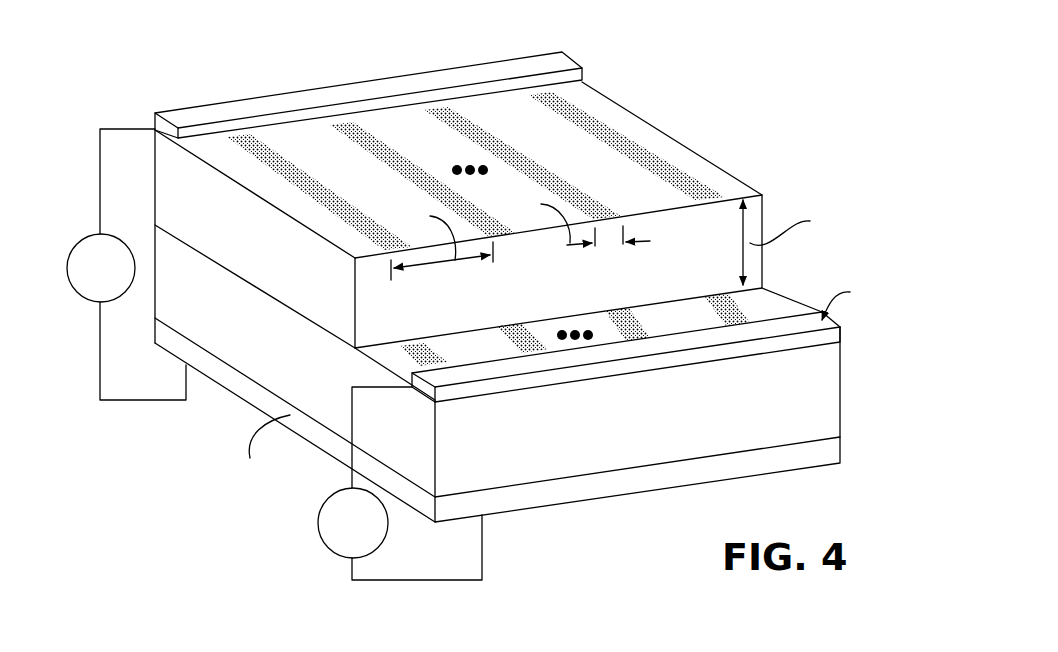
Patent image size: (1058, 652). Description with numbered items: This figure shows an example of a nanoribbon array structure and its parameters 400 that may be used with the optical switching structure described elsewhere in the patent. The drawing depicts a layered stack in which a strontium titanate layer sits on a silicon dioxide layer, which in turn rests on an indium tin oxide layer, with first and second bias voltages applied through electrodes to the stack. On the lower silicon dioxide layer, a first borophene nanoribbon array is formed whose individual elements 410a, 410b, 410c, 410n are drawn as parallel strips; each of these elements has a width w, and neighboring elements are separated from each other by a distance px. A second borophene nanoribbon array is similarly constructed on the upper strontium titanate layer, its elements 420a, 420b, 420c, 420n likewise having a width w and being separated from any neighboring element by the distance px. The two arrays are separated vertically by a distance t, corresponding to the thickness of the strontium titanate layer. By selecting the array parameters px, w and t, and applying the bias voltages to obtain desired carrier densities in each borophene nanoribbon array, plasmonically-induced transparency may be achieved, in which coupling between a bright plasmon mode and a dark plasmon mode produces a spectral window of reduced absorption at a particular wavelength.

The nanoribbon array structure/parameters 400 is at (682, 62).
The element of second borophene nanoribbon array 420a is at (245, 145).
The element of second borophene nanoribbon array 420b is at (350, 130).
The element of second borophene nanoribbon array 420c is at (445, 110).
The element of second borophene nanoribbon array 420n is at (541, 97).
The element of first borophene nanoribbon array 410a is at (432, 362).
The element of first borophene nanoribbon array 410b is at (533, 345).
The element of first borophene nanoribbon array 410c is at (630, 330).
The element of first borophene nanoribbon array 410n is at (720, 318).